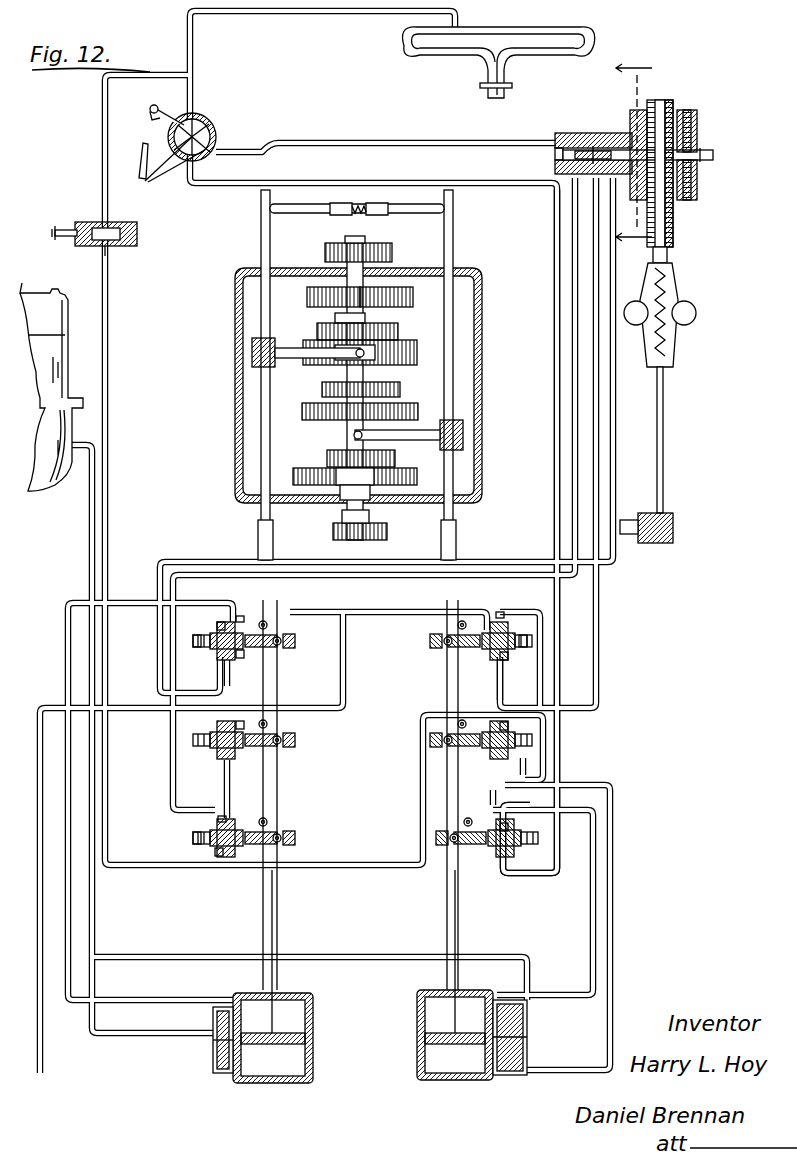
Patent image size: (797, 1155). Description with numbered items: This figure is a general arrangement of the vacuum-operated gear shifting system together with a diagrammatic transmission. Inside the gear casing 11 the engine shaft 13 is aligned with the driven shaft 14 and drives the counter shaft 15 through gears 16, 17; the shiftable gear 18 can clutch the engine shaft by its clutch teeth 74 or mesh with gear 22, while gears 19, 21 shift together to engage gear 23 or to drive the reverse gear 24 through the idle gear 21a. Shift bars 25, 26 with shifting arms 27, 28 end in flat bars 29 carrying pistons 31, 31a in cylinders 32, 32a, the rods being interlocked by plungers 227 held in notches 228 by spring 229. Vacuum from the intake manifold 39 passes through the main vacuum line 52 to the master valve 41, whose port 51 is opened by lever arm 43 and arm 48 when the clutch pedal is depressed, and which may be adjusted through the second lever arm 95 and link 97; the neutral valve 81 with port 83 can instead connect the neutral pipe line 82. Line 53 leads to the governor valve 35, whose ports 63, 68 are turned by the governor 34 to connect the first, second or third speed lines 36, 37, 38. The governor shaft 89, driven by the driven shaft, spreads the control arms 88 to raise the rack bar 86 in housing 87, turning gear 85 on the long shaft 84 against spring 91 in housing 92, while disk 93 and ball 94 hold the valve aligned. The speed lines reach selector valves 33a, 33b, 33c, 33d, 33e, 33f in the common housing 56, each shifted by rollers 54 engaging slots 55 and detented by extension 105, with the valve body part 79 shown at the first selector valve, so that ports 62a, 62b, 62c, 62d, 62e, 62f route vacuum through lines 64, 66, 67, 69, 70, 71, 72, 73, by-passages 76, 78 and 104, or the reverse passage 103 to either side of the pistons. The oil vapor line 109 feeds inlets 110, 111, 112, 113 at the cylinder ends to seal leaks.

The transmission gear casing 11 is at (483, 335).
The engine shaft 13 is at (338, 253).
The driven shaft 14 is at (340, 546).
The counter shaft 15 is at (345, 381).
The gear 16 is at (388, 286).
The gear 17 is at (405, 286).
The shiftable gear 18 is at (398, 332).
The shiftable gear 19 is at (408, 405).
The shiftable gear 21 is at (395, 458).
The idle gear 21a is at (308, 472).
The gear 22 is at (410, 356).
The gear 23 is at (322, 394).
The reverse gear 24 is at (394, 483).
The shift bar 25 is at (260, 225).
The shift bar 26 is at (455, 250).
The shifting arm 27 is at (252, 352).
The shifting arm 28 is at (462, 430).
The flat bar 29 is at (258, 548).
The piston 31 is at (276, 1084).
The piston 31a is at (418, 1070).
The cylinder 32 is at (314, 1060).
The cylinder 32a is at (418, 1025).
The selector valve 33a is at (264, 633).
The selector valve 33b is at (293, 741).
The selector valve 33c is at (266, 837).
The selector valve 33d is at (434, 840).
The selector valve 33e is at (428, 741).
The selector valve 33f is at (430, 650).
The governor 34 is at (684, 282).
The governor valve 35 is at (585, 131).
The first speed pipe line 36 is at (572, 246).
The second speed pipe line 37 is at (593, 275).
The third speed vacuum line 38 is at (616, 424).
The intake manifold 39 is at (528, 30).
The master valve 41 is at (207, 120).
The lever arm 43 is at (146, 114).
The arm 48 is at (166, 102).
The port 51 is at (210, 137).
The main vacuum line 52 is at (293, 12).
The line 53 is at (349, 143).
The rollers 54 is at (278, 700).
The slots 55 is at (266, 622).
The valve housing 56 is at (240, 618).
The port 62a is at (243, 658).
The port 62b is at (241, 720).
The port 62c is at (215, 852).
The port 62d is at (508, 830).
The port 62e is at (508, 728).
The port 62f is at (506, 660).
The port 63 is at (555, 160).
The pipe line 64 is at (322, 869).
The vacuum line 66 is at (524, 772).
The vacuum line 67 is at (594, 900).
The port 68 is at (593, 148).
The pipe line 69 is at (554, 1084).
The pipe 70 is at (500, 694).
The conduit 71 is at (345, 650).
The conduit 72 is at (143, 708).
The pipe line 73 is at (66, 672).
The clutch teeth 74 is at (338, 320).
The by-passage 76 is at (224, 803).
The by-passage 78 is at (220, 674).
The valve body 79 is at (216, 628).
The neutral valve 81 is at (138, 234).
The neutral pipe line 82 is at (103, 143).
The port 83 is at (107, 247).
The long shaft 84 is at (713, 156).
The gear 85 is at (673, 120).
The rack bar 86 is at (655, 108).
The housing 87 is at (668, 236).
The governor control arms 88 is at (674, 344).
The shaft 89 is at (662, 460).
The spring 91 is at (698, 180).
The housing 92 is at (698, 124).
The disk 93 is at (645, 80).
The ball 94 is at (632, 112).
The second lever arm 95 is at (160, 172).
The rigid link 97 is at (141, 150).
The reverse passage 103 is at (267, 184).
The by-pass 104 is at (492, 793).
The extension 105 is at (193, 641).
The oil vapor line 109 is at (88, 534).
The air and oil vapor inlet 110 is at (212, 1030).
The air and oil vapor inlet 111 is at (213, 1064).
The air and oil vapor inlet 112 is at (522, 1030).
The air and oil vapor inlet 113 is at (515, 1062).
The plungers 227 is at (361, 198).
The notches 228 is at (268, 211).
The spring 229 is at (350, 204).